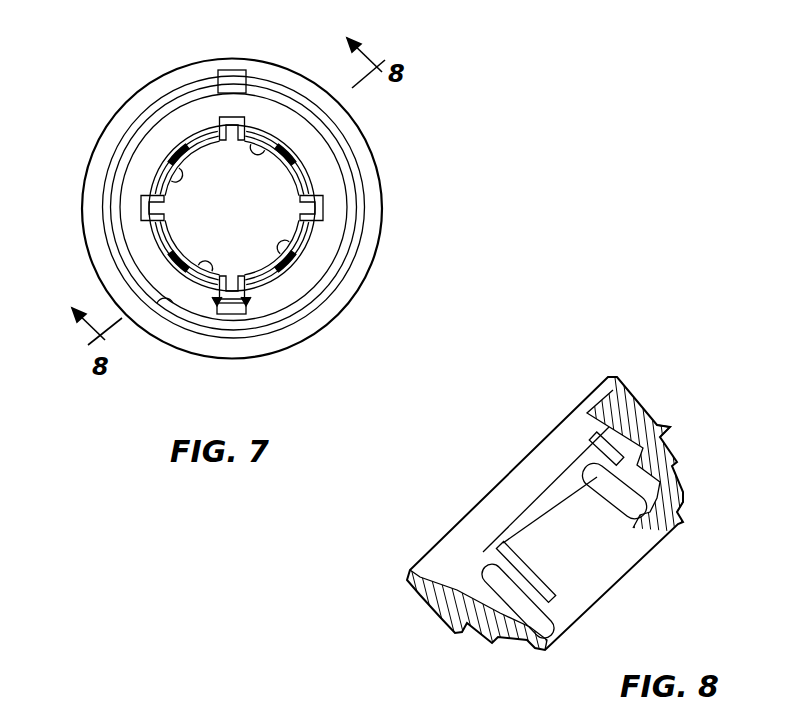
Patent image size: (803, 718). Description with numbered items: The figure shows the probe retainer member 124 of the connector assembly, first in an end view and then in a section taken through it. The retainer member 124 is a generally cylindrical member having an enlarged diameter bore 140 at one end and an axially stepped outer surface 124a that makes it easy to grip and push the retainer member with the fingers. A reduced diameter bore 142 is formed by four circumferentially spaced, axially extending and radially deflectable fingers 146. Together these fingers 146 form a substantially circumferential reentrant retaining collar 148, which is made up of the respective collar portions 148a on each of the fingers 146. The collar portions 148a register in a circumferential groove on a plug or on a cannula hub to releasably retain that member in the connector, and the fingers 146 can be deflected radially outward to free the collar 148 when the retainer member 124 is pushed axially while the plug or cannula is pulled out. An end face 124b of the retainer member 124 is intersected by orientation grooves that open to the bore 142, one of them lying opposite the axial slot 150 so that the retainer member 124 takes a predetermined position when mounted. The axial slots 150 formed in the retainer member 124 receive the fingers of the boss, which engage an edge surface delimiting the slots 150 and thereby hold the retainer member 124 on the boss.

In FIG. 7, the retainer member 124 is at (362, 140).
In FIG. 8, the retainer member 124 is at (585, 508).
In FIG. 8, the axially stepped outer surface 124a is at (672, 440).
In FIG. 8, the end face 124b is at (683, 505).
In FIG. 7, the enlarged diameter bore 140 is at (165, 312).
In FIG. 8, the enlarged diameter bore 140 is at (592, 402).
In FIG. 8, the reduced diameter bore 142 is at (640, 562).
In FIG. 7, the fingers 146 is at (239, 215).
In FIG. 8, the fingers 146 is at (569, 537).
In FIG. 8, the retaining collar 148 is at (495, 545).
In FIG. 7, the collar portions 148a is at (252, 128).
In FIG. 8, the collar portions 148a is at (548, 508).
In FIG. 7, the axial slots 150 is at (232, 66).